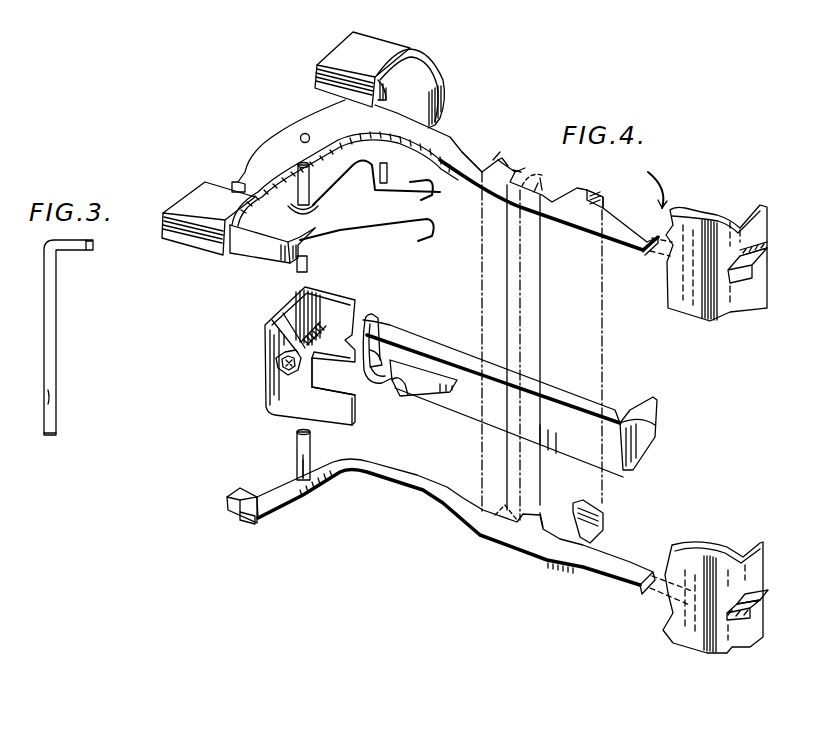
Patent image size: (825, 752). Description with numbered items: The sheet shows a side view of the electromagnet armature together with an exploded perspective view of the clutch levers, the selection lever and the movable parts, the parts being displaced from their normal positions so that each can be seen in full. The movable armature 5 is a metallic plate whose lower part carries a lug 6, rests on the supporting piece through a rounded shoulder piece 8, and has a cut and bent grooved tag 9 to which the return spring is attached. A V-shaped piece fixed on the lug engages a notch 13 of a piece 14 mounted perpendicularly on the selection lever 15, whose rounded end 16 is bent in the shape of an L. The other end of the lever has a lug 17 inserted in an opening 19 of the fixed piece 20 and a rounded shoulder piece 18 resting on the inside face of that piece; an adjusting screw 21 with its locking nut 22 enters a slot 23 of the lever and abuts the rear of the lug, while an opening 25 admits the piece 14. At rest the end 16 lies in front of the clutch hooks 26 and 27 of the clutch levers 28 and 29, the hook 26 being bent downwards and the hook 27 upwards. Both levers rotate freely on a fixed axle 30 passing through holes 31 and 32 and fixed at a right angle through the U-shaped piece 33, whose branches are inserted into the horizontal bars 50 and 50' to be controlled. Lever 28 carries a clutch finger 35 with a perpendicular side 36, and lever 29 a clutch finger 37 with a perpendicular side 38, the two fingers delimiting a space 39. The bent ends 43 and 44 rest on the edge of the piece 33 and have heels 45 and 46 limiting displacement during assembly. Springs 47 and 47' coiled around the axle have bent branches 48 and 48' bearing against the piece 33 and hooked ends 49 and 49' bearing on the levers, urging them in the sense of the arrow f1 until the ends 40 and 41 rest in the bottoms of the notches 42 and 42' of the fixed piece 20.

In FIG. 3, the movable armature 5 is at (56, 329).
In FIG. 3, the lug 6 is at (50, 428).
In FIG. 3, the shoulder piece 8 is at (54, 397).
In FIG. 3, the grooved tag 9 is at (91, 250).
In FIG. 4, the notch 13 is at (398, 398).
In FIG. 4, the piece 14 is at (388, 388).
In FIG. 4, the selection lever 15 is at (458, 390).
In FIG. 4, the rounded end 16 is at (648, 428).
In FIG. 4, the lug 17 is at (677, 189).
In FIG. 4, the shoulder piece 18 is at (374, 316).
In FIG. 4, the opening 19 is at (323, 322).
In FIG. 4, the fixed piece 20 is at (698, 222).
In FIG. 4, the adjusting screw 21 is at (282, 366).
In FIG. 4, the locking nut 22 is at (278, 356).
In FIG. 4, the slot 23 is at (368, 371).
In FIG. 4, the opening 25 is at (330, 392).
In FIG. 4, the clutch hook 26 is at (603, 203).
In FIG. 4, the clutch hook 27 is at (585, 511).
In FIG. 4, the clutch lever 28 is at (488, 164).
In FIG. 4, the clutch lever 29 is at (430, 514).
In FIG. 4, the fixed axle 30 is at (297, 192).
In FIG. 4, the hole 31 is at (301, 136).
In FIG. 4, the hole 32 is at (306, 482).
In FIG. 4, the U-shaped piece 33 is at (272, 238).
In FIG. 4, the clutch finger 35 is at (502, 330).
In FIG. 4, the side 36 is at (518, 174).
In FIG. 4, the clutch finger 37 is at (542, 184).
In FIG. 4, the side 38 is at (520, 522).
In FIG. 4, the space 39 is at (540, 180).
In FIG. 4, the end 40 is at (645, 242).
In FIG. 4, the end 41 is at (632, 583).
In FIG. 4, the notch 42 is at (769, 249).
In FIG. 4, the notch 42' is at (769, 585).
In FIG. 4, the bent end 43 is at (267, 165).
In FIG. 4, the bent end 44 is at (247, 519).
In FIG. 4, the heel 45 is at (232, 182).
In FIG. 4, the heel 46 is at (228, 498).
In FIG. 4, the spring 47 is at (376, 174).
In FIG. 4, the spring 47' is at (355, 234).
In FIG. 4, the bent branch 48 is at (347, 137).
In FIG. 4, the bent branch 48' is at (402, 169).
In FIG. 4, the hooked end 49 is at (431, 197).
In FIG. 4, the hooked end 49' is at (434, 234).
In FIG. 4, the horizontal bar 50 is at (206, 225).
In FIG. 4, the horizontal bar 50' is at (346, 69).